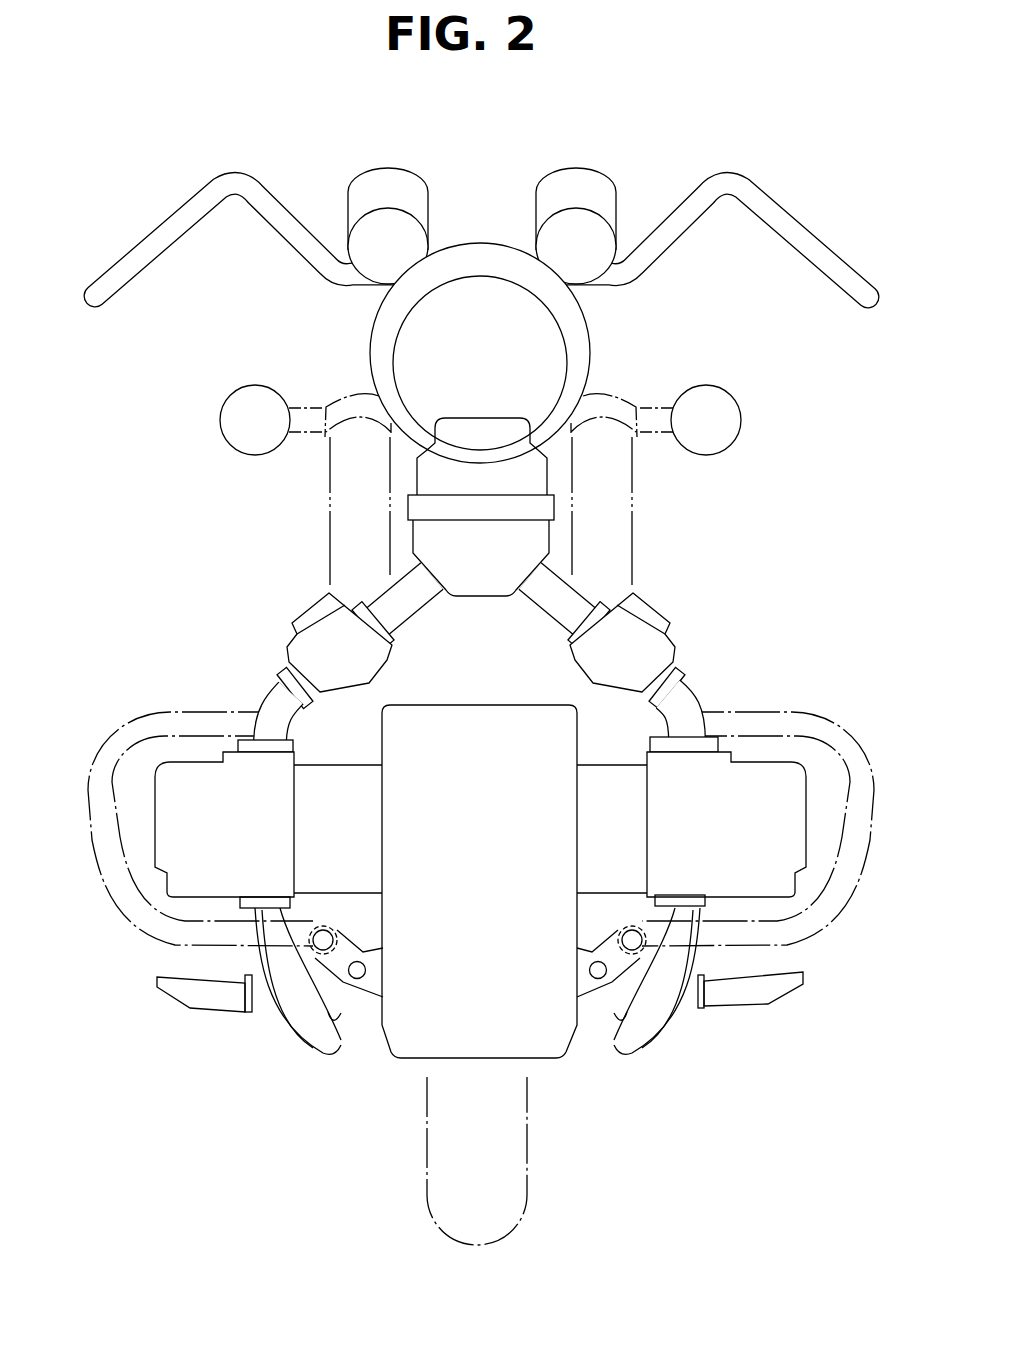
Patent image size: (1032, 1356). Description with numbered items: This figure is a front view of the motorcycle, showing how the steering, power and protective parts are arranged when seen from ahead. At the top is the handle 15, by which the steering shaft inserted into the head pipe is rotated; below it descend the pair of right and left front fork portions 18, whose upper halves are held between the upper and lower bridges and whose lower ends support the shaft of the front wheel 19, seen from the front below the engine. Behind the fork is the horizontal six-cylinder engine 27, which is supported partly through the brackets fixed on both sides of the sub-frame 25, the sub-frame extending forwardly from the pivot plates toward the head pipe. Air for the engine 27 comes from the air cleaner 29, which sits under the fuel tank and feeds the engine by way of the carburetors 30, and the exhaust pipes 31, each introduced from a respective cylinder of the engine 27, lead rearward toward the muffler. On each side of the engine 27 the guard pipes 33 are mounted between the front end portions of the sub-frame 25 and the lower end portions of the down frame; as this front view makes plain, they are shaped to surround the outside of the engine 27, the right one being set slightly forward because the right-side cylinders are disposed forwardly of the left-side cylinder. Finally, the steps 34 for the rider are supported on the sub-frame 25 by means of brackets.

The handle 15 is at (730, 173).
The front fork portions 18 is at (330, 533).
The front wheel 19 is at (503, 1193).
The sub-frame 25 is at (318, 932).
The horizontal six-cylinder engine 27 is at (494, 900).
The air cleaner 29 is at (481, 588).
The carburetors 30 is at (318, 628).
The exhaust pipes 31 is at (337, 1042).
The guard pipes 33 is at (142, 728).
The steps 34 is at (195, 995).